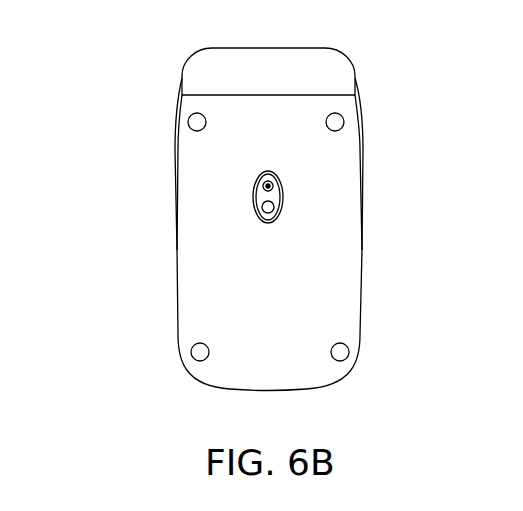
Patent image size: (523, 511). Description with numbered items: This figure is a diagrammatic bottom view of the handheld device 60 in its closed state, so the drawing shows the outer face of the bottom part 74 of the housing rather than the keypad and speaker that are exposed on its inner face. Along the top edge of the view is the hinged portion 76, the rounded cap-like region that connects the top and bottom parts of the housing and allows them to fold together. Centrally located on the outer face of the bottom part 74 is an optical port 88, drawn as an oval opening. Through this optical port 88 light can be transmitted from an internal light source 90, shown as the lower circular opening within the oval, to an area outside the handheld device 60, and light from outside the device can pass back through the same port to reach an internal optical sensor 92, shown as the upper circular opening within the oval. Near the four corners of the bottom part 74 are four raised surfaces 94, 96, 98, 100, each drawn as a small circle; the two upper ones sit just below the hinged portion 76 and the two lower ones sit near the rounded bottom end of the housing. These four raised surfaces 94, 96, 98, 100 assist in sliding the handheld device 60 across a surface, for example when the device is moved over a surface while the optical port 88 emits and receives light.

The handheld device 60 is at (153, 48).
The bottom part 74 is at (360, 237).
The hinged portion 76 is at (350, 72).
The optical port 88 is at (255, 197).
The internal light source 90 is at (275, 208).
The internal optical sensor 92 is at (275, 185).
The raised surface 94 is at (338, 120).
The raised surface 96 is at (344, 351).
The raised surface 98 is at (198, 352).
The raised surface 100 is at (190, 119).